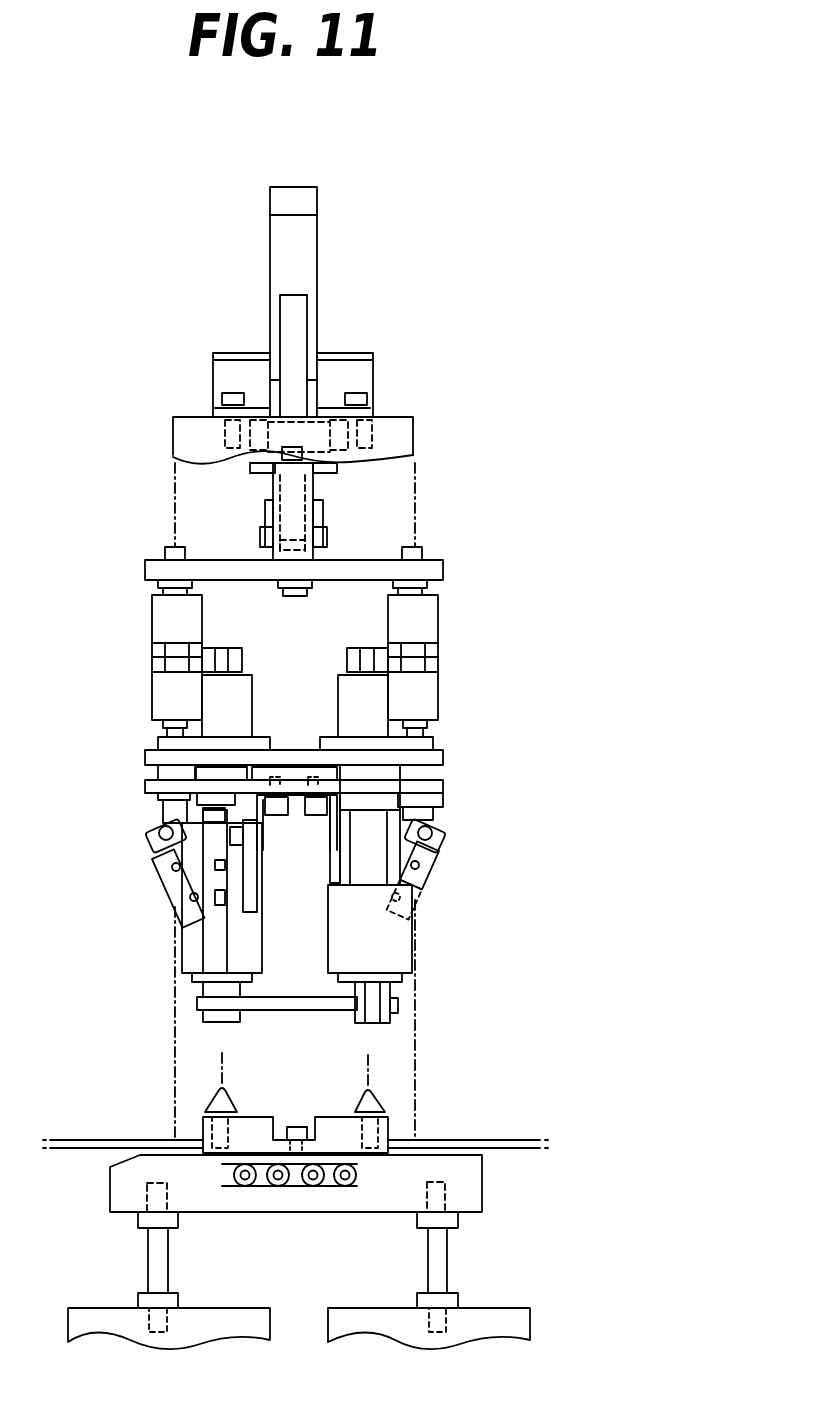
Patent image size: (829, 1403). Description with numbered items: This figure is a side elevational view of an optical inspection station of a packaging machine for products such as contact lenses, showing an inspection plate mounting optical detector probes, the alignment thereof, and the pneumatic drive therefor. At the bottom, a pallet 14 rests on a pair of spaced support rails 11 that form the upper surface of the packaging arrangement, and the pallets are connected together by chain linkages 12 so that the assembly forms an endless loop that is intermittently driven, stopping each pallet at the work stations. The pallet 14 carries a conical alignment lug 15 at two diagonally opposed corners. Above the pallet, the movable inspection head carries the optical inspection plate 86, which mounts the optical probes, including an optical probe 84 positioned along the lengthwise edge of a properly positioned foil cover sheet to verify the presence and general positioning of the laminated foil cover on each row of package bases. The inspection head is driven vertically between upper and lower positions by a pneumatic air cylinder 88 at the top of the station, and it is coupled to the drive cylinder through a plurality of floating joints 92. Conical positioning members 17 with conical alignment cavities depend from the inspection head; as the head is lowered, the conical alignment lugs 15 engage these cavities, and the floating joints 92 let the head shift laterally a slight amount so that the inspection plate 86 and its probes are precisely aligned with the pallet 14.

The support rails 11 is at (373, 1213).
The chain linkages 12 is at (262, 1212).
The pallet 14 is at (332, 1113).
The conical alignment lug 15 is at (363, 1092).
The conical positioning members 17 is at (197, 1020).
The optical probe 84 is at (165, 892).
The optical inspection plate 86 is at (445, 787).
The pneumatic air cylinder 88 is at (317, 263).
The floating joints 92 is at (148, 697).